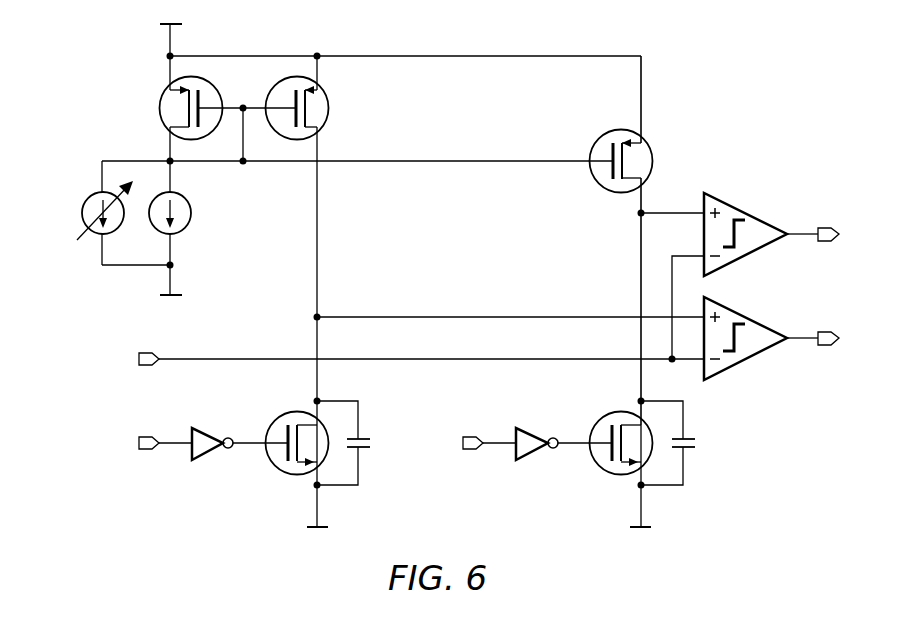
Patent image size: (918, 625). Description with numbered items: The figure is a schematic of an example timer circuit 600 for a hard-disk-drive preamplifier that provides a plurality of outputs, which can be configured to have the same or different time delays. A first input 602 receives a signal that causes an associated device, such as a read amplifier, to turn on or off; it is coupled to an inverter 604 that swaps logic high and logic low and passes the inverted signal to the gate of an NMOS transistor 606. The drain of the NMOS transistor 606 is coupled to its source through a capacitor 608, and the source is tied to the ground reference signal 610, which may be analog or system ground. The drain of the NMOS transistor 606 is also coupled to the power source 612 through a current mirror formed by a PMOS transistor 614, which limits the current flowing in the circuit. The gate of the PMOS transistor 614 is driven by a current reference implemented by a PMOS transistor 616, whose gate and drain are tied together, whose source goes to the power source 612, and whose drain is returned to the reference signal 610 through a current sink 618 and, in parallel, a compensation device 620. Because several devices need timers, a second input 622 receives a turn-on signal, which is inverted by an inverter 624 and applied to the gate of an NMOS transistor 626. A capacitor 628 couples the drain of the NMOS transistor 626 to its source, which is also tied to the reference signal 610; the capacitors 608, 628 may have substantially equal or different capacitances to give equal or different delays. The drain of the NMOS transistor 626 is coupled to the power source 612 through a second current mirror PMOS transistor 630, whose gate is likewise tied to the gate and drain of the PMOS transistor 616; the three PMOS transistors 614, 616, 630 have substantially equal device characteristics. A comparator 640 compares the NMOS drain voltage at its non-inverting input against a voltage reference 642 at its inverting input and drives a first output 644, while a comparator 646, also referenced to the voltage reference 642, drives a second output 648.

The circuit 600 is at (730, 62).
The input 602 is at (143, 452).
The inverter 604 is at (210, 430).
The NMOS transistor 606 is at (277, 470).
The capacitor 608 is at (372, 444).
The reference signal PGND 610 is at (172, 280).
The power source PVDD 612 is at (170, 42).
The current mirror PMOS transistor 614 is at (328, 100).
The PMOS transistor 616 is at (160, 103).
The current sink 618 is at (192, 213).
The compensation device 620 is at (82, 213).
The second input 622 is at (466, 452).
The inverter 624 is at (536, 430).
The NMOS transistor 626 is at (601, 470).
The capacitor 628 is at (697, 444).
The current mirror PMOS transistor 630 is at (651, 153).
The comparator 640 is at (740, 369).
The voltage reference VREF 642 is at (143, 370).
The first output 644 is at (825, 350).
The comparator 646 is at (740, 204).
The second output 648 is at (825, 226).